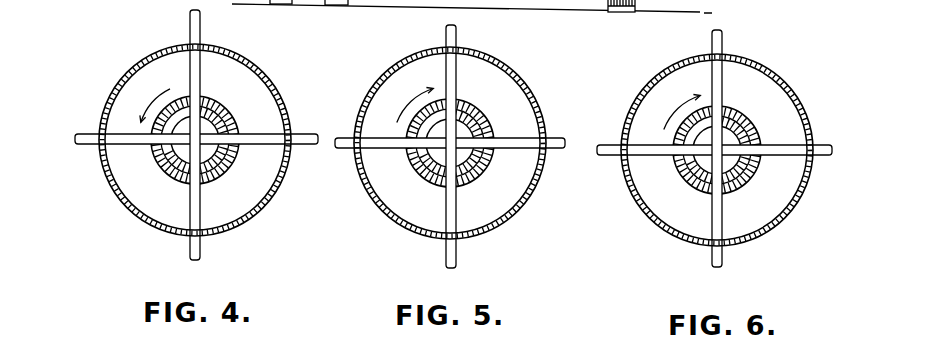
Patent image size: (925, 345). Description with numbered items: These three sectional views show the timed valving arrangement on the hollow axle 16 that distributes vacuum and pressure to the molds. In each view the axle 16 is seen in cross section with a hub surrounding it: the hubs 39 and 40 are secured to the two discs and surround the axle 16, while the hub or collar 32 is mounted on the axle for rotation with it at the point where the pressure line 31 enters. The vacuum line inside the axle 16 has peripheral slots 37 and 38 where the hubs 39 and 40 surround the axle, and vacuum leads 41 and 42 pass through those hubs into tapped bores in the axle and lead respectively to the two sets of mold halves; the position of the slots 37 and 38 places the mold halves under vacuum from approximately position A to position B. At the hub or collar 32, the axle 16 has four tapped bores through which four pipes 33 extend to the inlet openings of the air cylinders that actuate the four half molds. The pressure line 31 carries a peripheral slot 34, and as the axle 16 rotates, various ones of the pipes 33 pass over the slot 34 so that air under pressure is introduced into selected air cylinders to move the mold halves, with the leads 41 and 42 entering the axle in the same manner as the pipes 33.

In FIG. 4, the axle 16 is at (228, 171).
In FIG. 5, the axle 16 is at (423, 176).
In FIG. 6, the axle 16 is at (728, 122).
In FIG. 6, the pressure line 31 is at (753, 132).
In FIG. 6, the hub or collar 32 is at (750, 58).
In FIG. 6, the pipes 33 is at (723, 35).
In FIG. 6, the peripheral slot 34 is at (693, 168).
In FIG. 4, the peripheral slot 37 is at (173, 160).
In FIG. 5, the peripheral slot 38 is at (477, 179).
In FIG. 4, the hub 39 is at (268, 74).
In FIG. 5, the hub 40 is at (512, 72).
In FIG. 4, the vacuum lead 41 is at (193, 25).
In FIG. 5, the vacuum lead 42 is at (446, 36).